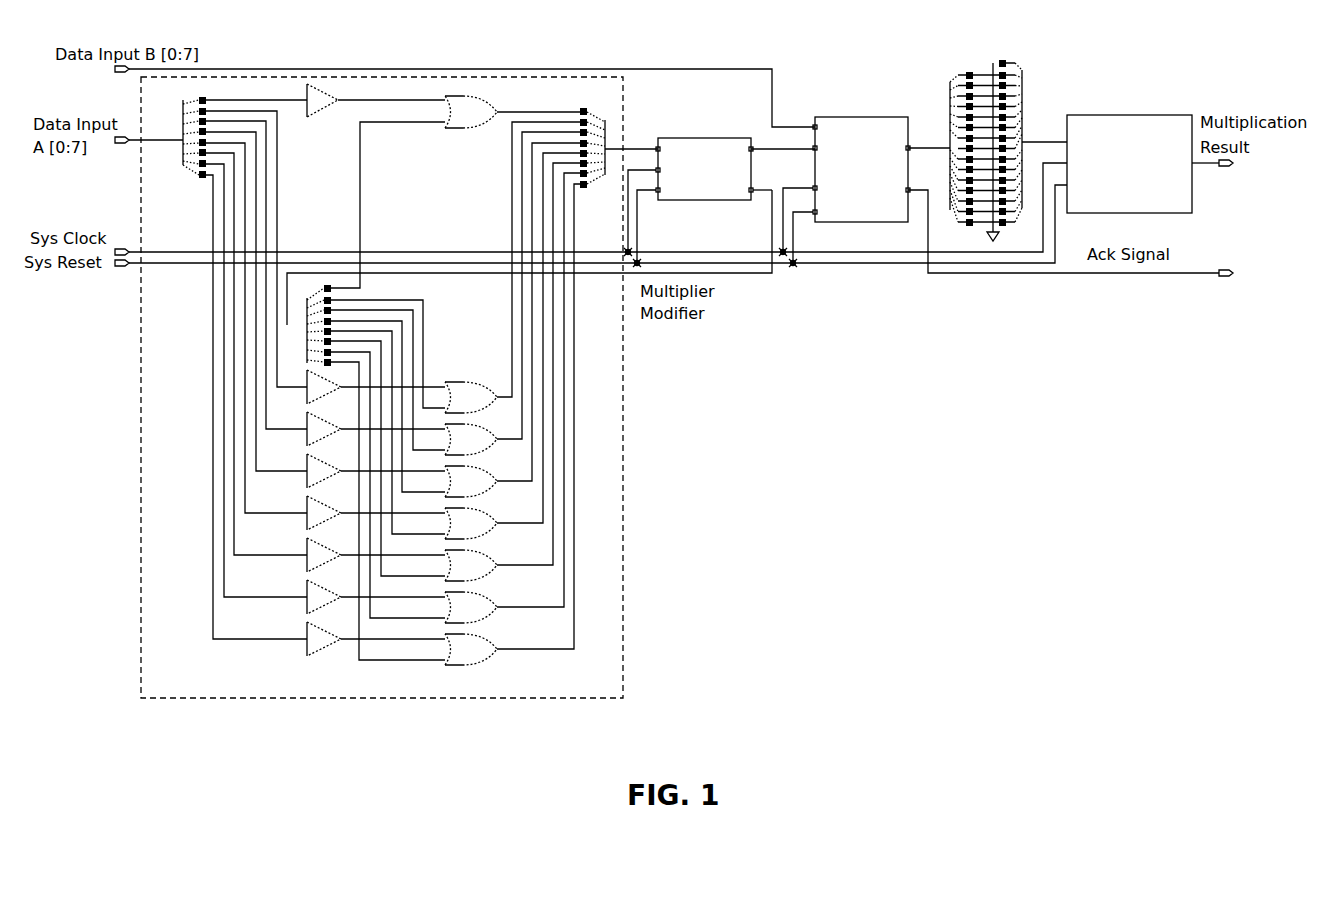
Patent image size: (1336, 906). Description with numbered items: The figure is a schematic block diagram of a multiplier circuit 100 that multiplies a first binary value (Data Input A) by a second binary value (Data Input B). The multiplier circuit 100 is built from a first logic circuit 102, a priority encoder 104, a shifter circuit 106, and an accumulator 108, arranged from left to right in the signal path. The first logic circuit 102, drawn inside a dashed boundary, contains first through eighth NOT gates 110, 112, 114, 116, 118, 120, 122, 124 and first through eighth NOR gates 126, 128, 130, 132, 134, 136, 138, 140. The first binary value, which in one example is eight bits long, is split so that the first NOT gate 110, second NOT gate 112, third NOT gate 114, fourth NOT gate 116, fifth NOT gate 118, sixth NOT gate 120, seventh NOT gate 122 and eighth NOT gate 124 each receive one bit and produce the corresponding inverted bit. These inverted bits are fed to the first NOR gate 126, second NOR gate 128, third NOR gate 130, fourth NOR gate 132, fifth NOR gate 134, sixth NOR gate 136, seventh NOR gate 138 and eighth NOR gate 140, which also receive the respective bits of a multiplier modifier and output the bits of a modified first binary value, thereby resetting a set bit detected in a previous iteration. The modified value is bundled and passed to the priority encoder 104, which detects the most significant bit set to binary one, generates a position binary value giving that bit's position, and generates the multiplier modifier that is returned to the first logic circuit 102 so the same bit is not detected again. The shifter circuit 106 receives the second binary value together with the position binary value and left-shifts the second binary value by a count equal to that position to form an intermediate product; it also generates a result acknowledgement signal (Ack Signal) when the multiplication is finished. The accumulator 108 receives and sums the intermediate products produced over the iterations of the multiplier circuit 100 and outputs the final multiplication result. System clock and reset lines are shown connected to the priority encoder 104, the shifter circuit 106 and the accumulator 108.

The multiplier circuit 100 is at (96, 734).
The first logic circuit 102 is at (623, 128).
The priority encoder 104 is at (703, 138).
The shifter circuit 106 is at (862, 117).
The accumulator 108 is at (1125, 115).
The first NOT gate 110 is at (334, 105).
The second NOT gate 112 is at (334, 391).
The third NOT gate 114 is at (334, 433).
The fourth NOT gate 116 is at (334, 475).
The fifth NOT gate 118 is at (334, 517).
The sixth NOT gate 120 is at (334, 559).
The seventh NOT gate 122 is at (334, 601).
The eighth NOT gate 124 is at (334, 643).
The first NOR gate 126 is at (499, 116).
The second NOR gate 128 is at (492, 402).
The third NOR gate 130 is at (492, 444).
The fourth NOR gate 132 is at (492, 486).
The fifth NOR gate 134 is at (492, 528).
The sixth NOR gate 136 is at (492, 570).
The seventh NOR gate 138 is at (492, 612).
The eighth NOR gate 140 is at (492, 654).